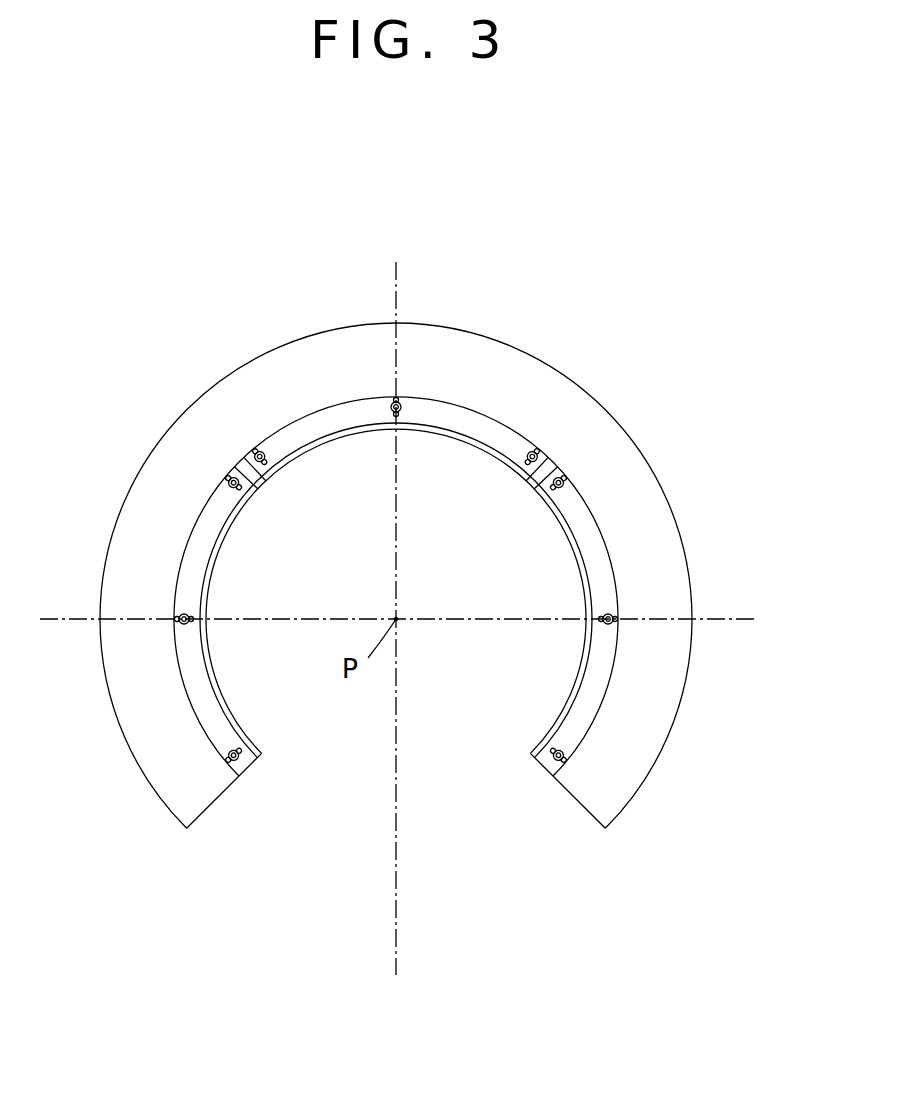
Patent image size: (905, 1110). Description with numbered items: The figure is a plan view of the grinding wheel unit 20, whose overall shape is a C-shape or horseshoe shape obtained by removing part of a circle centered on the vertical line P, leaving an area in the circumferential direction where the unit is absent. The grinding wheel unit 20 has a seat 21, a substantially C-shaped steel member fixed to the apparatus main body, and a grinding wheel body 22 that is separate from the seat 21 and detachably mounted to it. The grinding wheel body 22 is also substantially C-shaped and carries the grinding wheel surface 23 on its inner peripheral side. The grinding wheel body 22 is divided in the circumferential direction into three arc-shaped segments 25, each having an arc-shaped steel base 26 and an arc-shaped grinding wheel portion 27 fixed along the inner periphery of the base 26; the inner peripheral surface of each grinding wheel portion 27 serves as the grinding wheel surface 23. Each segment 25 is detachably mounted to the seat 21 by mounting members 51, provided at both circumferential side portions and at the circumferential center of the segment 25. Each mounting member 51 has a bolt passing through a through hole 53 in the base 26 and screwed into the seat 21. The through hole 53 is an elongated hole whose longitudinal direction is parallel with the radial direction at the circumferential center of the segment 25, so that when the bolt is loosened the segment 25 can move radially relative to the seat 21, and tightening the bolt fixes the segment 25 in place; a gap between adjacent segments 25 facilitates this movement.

The grinding wheel unit 20 is at (576, 383).
The seat 21 is at (222, 402).
The grinding wheel body 22 is at (492, 404).
The grinding wheel surface 23 is at (425, 432).
The segment 25 is at (265, 266).
The base 26 is at (307, 430).
The grinding wheel portion 27 is at (357, 430).
The mounting member 51 is at (402, 398).
The through hole 53 is at (265, 463).